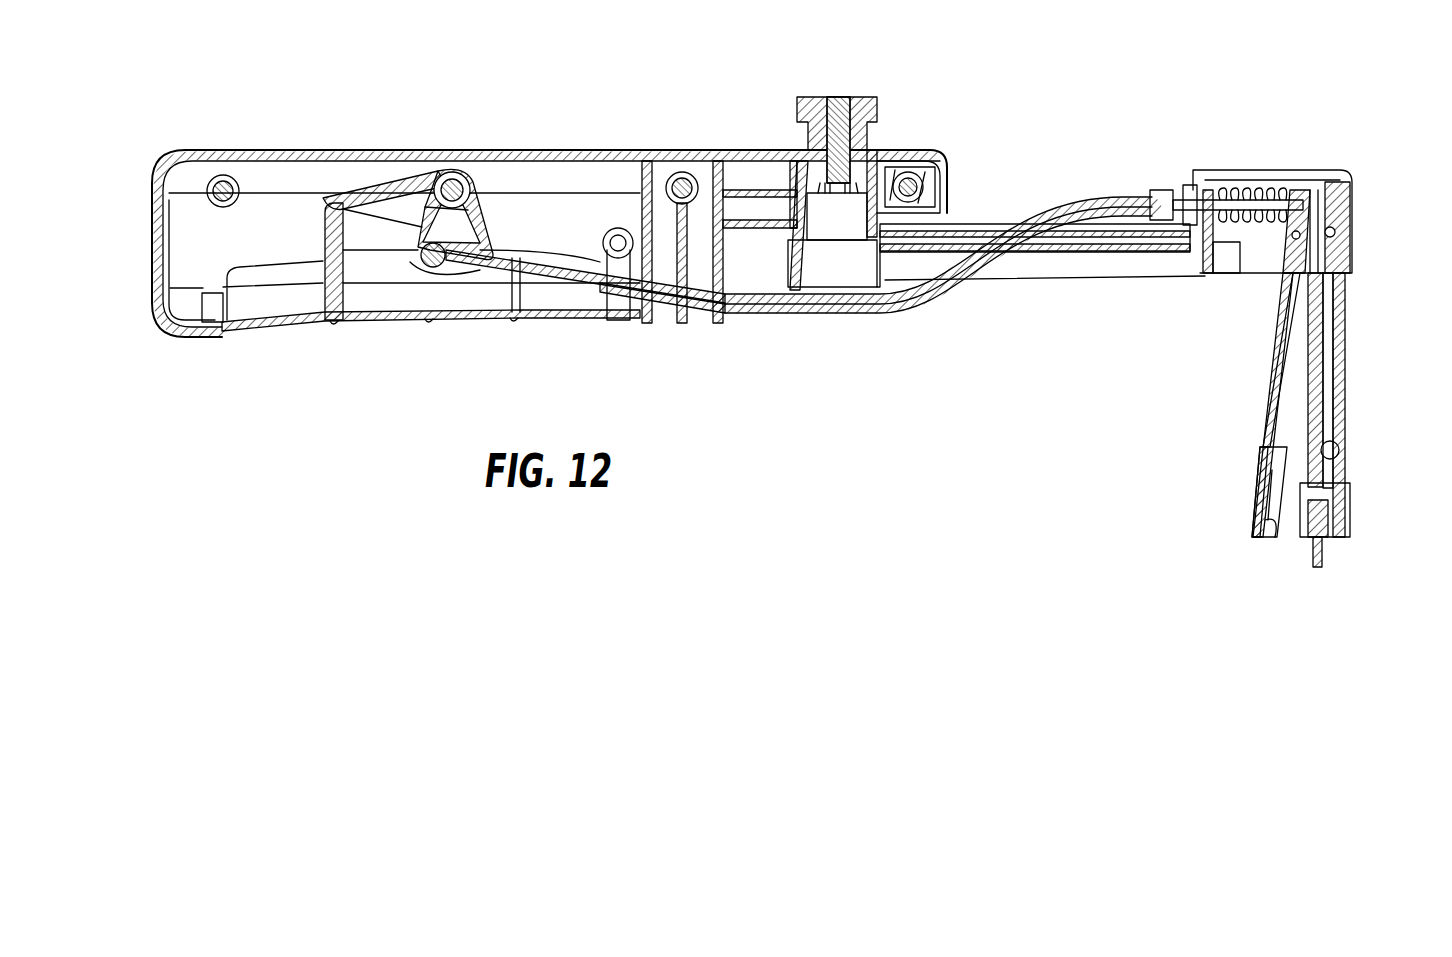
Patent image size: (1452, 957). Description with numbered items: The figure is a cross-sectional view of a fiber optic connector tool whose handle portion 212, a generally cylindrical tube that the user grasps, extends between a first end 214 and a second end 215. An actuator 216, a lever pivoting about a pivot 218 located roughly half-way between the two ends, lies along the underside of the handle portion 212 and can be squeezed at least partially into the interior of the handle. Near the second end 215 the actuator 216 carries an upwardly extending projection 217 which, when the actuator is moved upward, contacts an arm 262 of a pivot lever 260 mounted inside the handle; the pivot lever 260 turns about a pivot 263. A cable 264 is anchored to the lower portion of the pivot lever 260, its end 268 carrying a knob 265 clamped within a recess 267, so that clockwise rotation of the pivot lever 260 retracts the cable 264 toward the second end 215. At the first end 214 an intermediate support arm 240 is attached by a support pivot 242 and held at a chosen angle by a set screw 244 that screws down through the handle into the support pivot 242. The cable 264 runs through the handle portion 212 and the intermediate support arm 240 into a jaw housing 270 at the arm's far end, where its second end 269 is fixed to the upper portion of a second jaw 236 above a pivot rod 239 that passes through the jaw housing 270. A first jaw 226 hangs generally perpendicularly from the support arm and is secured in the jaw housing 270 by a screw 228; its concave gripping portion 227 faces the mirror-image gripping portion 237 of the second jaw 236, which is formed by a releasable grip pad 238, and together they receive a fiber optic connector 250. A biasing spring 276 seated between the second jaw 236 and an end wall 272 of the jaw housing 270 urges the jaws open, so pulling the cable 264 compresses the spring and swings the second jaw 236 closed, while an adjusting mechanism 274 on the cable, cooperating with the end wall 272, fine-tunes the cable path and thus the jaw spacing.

The handle portion 212 is at (385, 150).
The first end 214 is at (930, 150).
The second end 215 is at (192, 150).
The actuator 216 is at (283, 331).
The projection 217 is at (327, 243).
The pivot 218 is at (618, 230).
The first jaw 226 is at (1347, 360).
The gripping portion 227 is at (1322, 450).
The screw 228 is at (1350, 480).
The second jaw 236 is at (1273, 373).
The gripping portion 237 is at (1287, 523).
The grip pad 238 is at (1255, 490).
The pivot rod 239 is at (1303, 188).
The intermediate support arm 240 is at (1053, 277).
The support pivot 242 is at (813, 203).
The set screw 244 is at (817, 97).
The fiber optic connector 250 is at (1327, 520).
The pivot lever 260 is at (424, 175).
The arm 262 is at (360, 195).
The pivot 263 is at (454, 172).
The cable 264 is at (835, 310).
The knob 265 is at (433, 265).
The recess 267 is at (392, 252).
The end of cable 268 is at (533, 287).
The second end of cable 269 is at (1273, 197).
The jaw housing 270 is at (1218, 172).
The end wall 272 is at (1203, 275).
The adjusting mechanism 274 is at (1163, 190).
The biasing spring 276 is at (1250, 190).